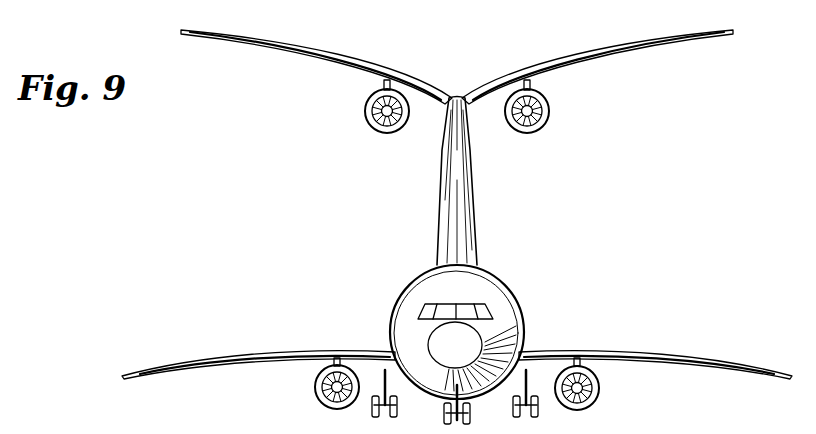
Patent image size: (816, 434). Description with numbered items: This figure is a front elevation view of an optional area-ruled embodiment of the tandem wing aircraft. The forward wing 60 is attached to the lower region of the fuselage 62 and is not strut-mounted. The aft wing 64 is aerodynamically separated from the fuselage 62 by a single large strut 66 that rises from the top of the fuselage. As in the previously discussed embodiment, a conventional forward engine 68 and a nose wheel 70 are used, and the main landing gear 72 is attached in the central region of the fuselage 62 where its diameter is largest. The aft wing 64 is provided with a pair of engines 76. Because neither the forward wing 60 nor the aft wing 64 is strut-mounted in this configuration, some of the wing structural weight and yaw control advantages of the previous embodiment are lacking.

The forward wing 60 is at (272, 349).
The fuselage 62 is at (522, 302).
The aft wing 64 is at (345, 60).
The single large strut 66 is at (476, 206).
The forward engine 68 is at (313, 387).
The nose wheel 70 is at (470, 413).
The main landing gear 72 is at (370, 412).
The engines 76 is at (372, 131).